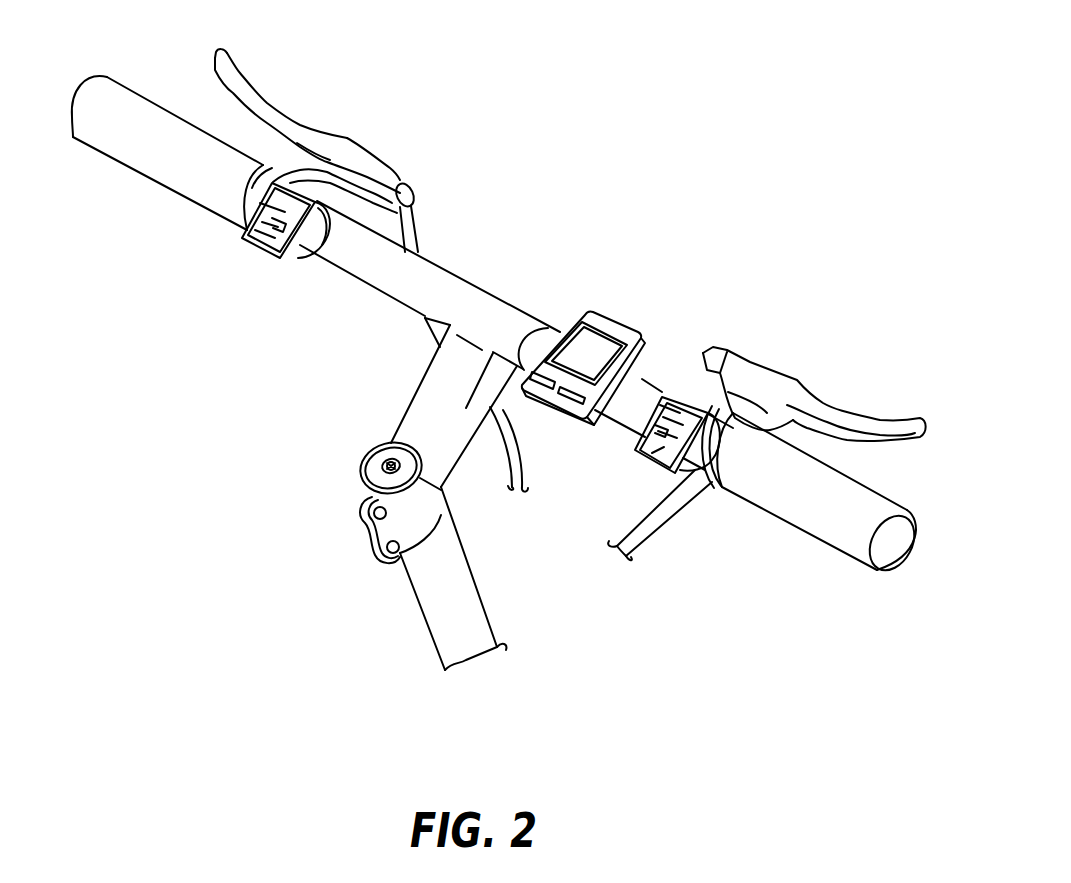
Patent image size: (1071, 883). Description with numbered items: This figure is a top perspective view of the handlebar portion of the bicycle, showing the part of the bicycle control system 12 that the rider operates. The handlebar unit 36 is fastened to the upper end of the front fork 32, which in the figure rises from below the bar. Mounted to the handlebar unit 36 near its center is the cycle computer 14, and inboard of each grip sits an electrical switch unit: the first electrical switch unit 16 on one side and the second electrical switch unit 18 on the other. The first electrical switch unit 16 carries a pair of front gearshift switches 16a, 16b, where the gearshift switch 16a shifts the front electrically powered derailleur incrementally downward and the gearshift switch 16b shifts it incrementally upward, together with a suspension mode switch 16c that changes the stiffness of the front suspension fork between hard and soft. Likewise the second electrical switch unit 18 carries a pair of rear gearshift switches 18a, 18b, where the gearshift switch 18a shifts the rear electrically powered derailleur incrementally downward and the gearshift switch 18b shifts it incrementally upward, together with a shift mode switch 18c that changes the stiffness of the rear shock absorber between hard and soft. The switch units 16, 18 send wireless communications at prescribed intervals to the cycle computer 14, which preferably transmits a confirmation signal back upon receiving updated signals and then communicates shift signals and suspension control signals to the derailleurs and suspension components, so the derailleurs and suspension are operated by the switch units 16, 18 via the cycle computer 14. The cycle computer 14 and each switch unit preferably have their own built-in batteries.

The bicycle control system 12 is at (668, 319).
The cycle computer 14 is at (607, 325).
The first electrical switch unit 16 is at (256, 268).
The front gearshift switch 16a is at (241, 242).
The front gearshift switch 16b is at (276, 203).
The suspension mode switch 16c is at (281, 260).
The second electrical switch unit 18 is at (640, 490).
The rear gearshift switch 18a is at (652, 461).
The rear gearshift switch 18b is at (677, 414).
The shift mode switch 18c is at (652, 433).
The front fork 32 is at (420, 613).
The handlebar unit 36 is at (422, 267).